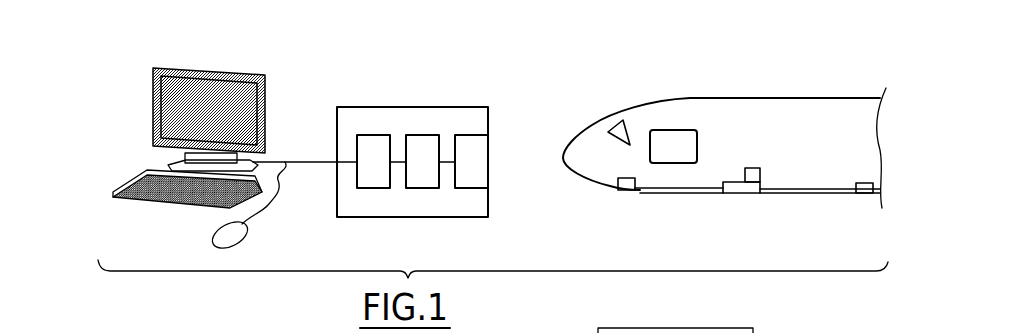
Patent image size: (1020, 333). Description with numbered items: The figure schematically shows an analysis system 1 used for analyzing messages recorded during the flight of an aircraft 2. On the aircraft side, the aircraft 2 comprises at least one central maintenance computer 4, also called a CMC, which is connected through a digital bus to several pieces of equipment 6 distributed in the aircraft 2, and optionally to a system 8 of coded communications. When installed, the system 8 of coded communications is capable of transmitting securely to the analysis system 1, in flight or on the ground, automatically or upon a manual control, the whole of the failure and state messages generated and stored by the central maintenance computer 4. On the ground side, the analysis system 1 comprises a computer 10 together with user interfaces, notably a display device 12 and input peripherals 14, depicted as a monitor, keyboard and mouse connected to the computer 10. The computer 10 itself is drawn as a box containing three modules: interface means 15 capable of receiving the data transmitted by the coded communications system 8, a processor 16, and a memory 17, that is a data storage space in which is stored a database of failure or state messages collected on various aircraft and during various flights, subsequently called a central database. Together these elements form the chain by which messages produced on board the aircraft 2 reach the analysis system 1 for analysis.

The analysis system 1 is at (337, 83).
The aircraft 2 is at (798, 99).
The central maintenance computer 4 is at (743, 194).
The pieces of equipment 6 is at (626, 191).
The system of coded communications 8 is at (761, 179).
The computer 10 is at (450, 107).
The display device 12 is at (265, 92).
The input peripherals 14 is at (203, 207).
The interface means 15 is at (489, 183).
The processor 16 is at (367, 189).
The memory 17 is at (420, 189).